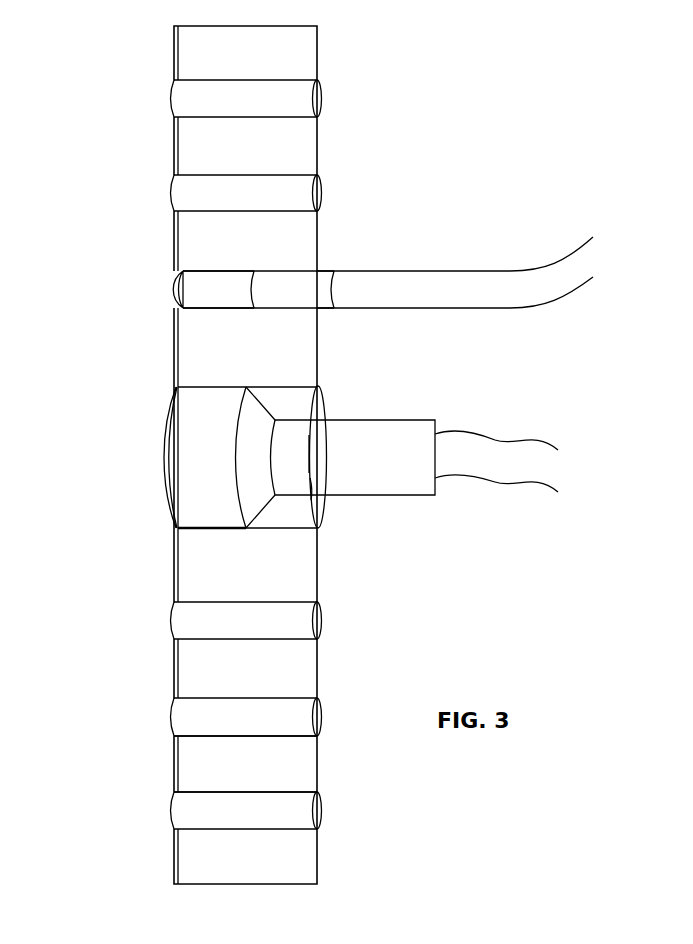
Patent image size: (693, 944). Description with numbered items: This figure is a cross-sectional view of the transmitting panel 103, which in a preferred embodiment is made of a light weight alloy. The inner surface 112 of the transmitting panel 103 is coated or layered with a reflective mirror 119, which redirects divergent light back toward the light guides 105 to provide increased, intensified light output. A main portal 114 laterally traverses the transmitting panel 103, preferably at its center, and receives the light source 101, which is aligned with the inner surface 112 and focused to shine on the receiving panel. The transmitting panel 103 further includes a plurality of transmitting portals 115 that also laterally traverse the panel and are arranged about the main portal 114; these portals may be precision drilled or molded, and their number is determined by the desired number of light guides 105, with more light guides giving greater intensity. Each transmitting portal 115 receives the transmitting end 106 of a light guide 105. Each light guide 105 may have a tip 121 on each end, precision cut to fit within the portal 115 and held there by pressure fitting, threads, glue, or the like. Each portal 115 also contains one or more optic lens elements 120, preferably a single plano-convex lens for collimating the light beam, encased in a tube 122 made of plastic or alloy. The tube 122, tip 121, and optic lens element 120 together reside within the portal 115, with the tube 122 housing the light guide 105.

The light source 101 is at (418, 485).
The transmitting panel 103 is at (197, 48).
The light guide 105 is at (468, 290).
The transmitting end 106 is at (357, 308).
The inner surface 112 is at (176, 350).
The main portal 114 is at (323, 510).
The transmitting portal 115 is at (170, 93).
The reflective mirror 119 is at (175, 760).
The optic lens element 120 is at (172, 282).
The tip 121 is at (300, 270).
The tube 122 is at (223, 270).